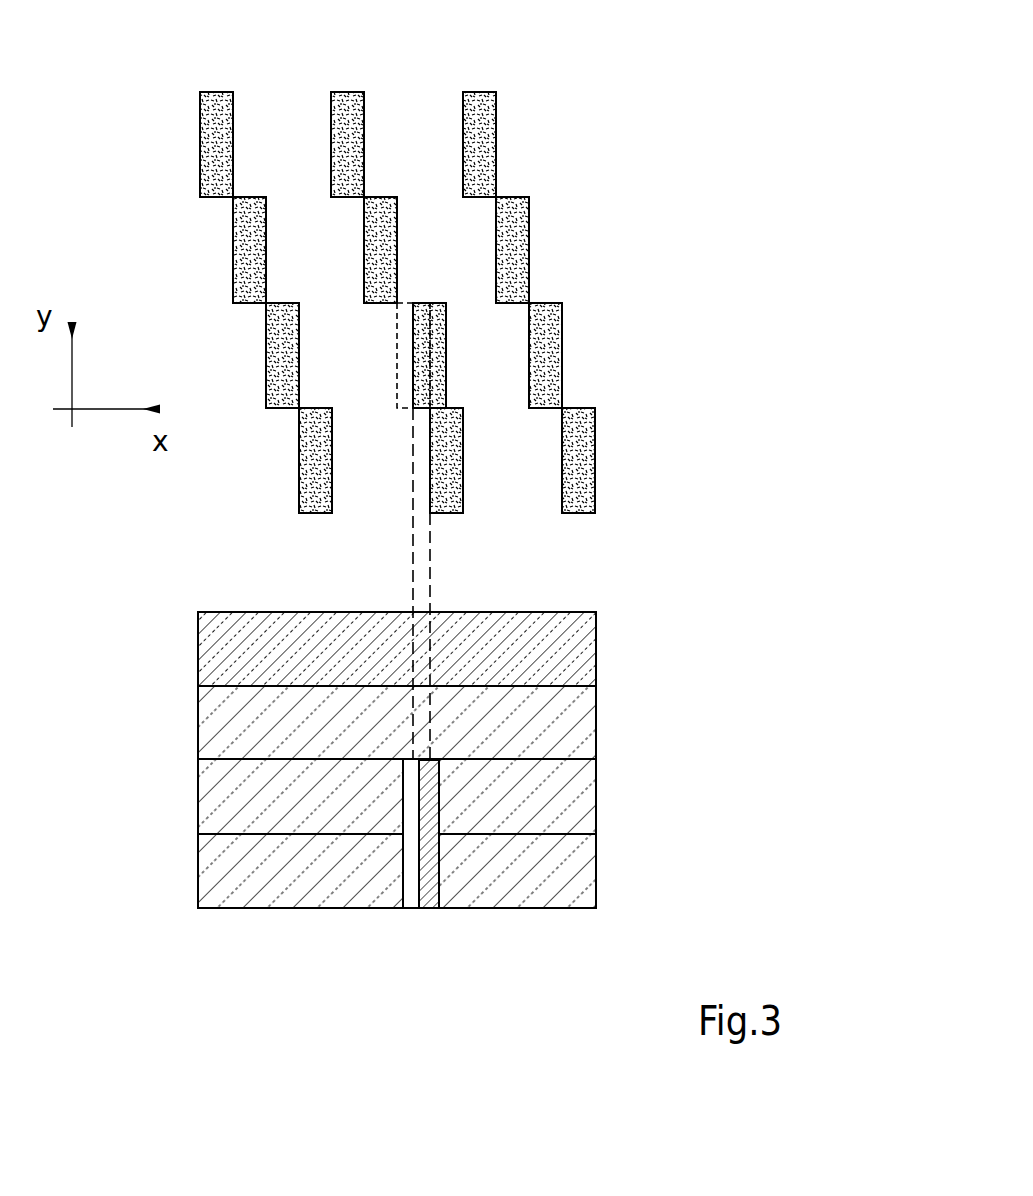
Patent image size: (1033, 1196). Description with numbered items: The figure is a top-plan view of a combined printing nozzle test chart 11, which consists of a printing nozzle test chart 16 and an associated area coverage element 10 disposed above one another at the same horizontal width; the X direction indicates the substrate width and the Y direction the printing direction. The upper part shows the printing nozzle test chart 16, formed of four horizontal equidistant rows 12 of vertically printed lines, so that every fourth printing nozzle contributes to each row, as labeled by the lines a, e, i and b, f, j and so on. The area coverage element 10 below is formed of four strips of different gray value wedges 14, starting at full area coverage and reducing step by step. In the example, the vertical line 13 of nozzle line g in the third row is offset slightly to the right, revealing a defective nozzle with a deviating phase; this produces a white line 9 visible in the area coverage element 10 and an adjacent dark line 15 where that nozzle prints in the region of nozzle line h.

The white line 9 is at (413, 890).
The area coverage element 10 is at (429, 771).
The combined printing nozzle test chart 11 is at (727, 373).
The horizontal equidistant rows 12 is at (487, 147).
The vertical line 13 is at (440, 340).
The gray value wedges 14 is at (220, 658).
The dark line 15 is at (428, 890).
The printing nozzle test chart 16 is at (428, 259).